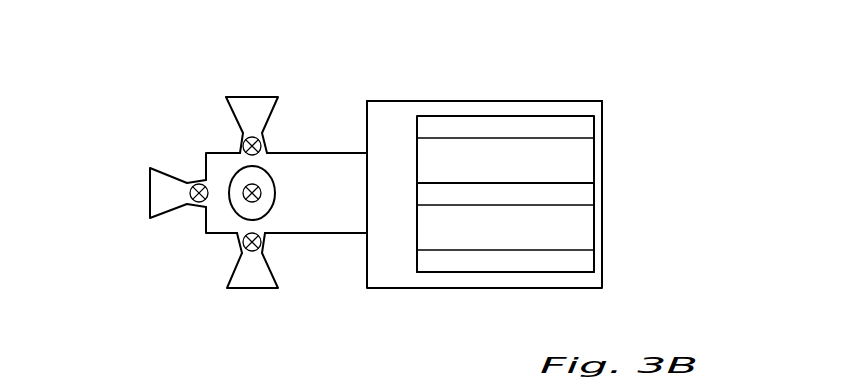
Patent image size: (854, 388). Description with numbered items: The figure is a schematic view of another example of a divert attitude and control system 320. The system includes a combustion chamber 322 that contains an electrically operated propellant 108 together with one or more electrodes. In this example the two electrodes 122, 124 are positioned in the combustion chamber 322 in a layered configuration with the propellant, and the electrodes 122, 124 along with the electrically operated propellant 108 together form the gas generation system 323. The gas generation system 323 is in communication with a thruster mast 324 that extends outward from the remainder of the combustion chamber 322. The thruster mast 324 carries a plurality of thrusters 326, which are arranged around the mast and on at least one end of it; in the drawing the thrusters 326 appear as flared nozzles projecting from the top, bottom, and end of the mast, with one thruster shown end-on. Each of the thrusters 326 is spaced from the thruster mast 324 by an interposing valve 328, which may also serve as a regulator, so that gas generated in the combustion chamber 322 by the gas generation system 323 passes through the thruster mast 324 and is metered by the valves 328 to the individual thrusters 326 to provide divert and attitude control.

The electrically operated propellant 108 is at (583, 230).
The electrode 122 is at (568, 125).
The electrode 124 is at (587, 193).
The divert attitude and control system 320 is at (440, 288).
The combustion chamber 322 is at (423, 101).
The gas generation system 323 is at (560, 238).
The thruster mast 324 is at (303, 233).
The thruster 326 is at (252, 97).
The valve 328 is at (267, 138).